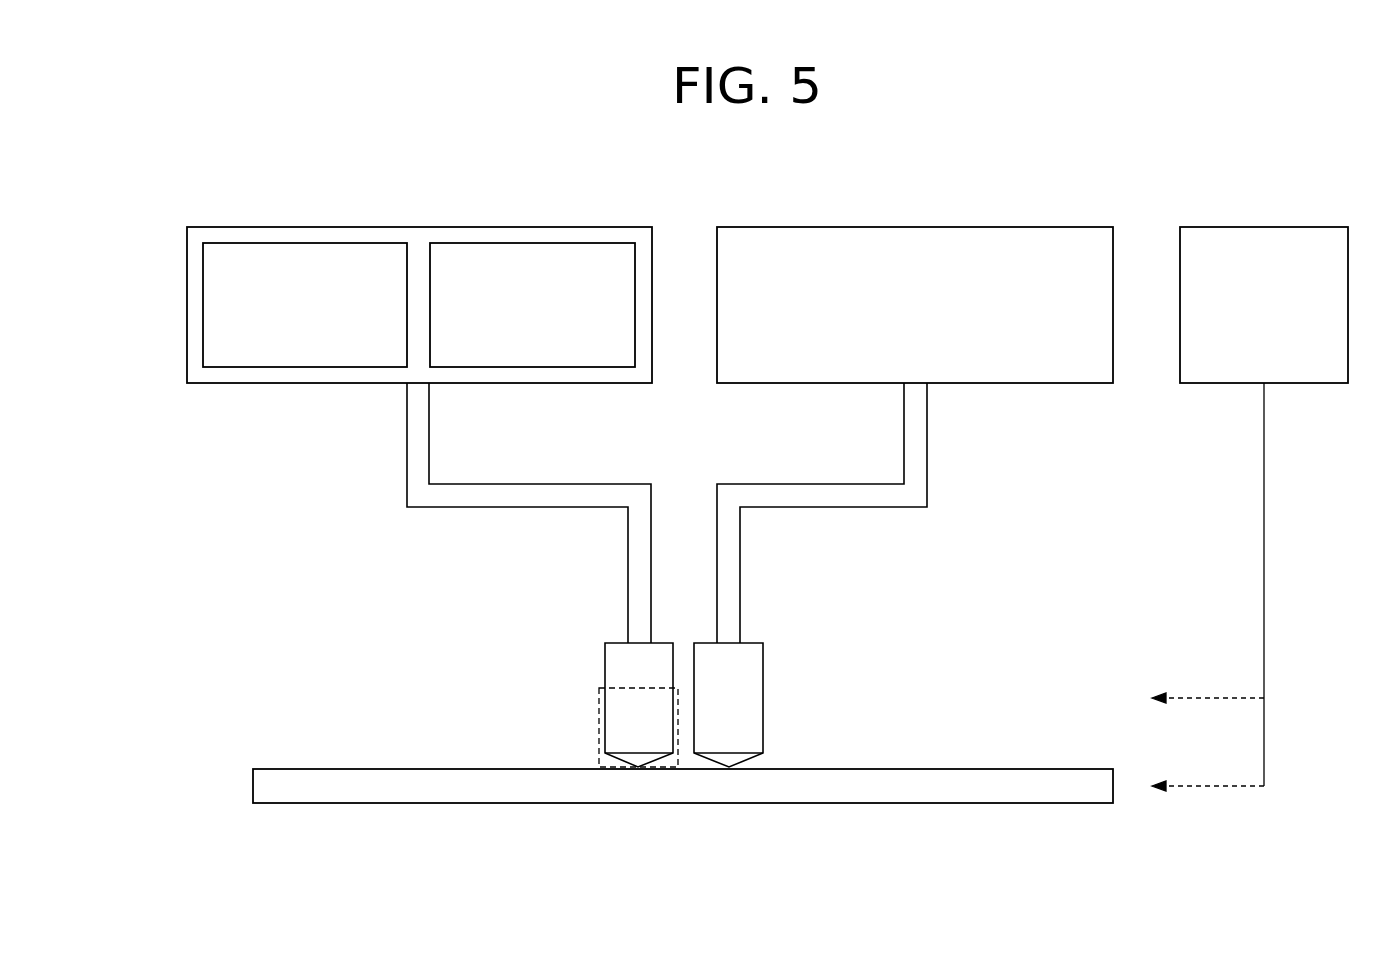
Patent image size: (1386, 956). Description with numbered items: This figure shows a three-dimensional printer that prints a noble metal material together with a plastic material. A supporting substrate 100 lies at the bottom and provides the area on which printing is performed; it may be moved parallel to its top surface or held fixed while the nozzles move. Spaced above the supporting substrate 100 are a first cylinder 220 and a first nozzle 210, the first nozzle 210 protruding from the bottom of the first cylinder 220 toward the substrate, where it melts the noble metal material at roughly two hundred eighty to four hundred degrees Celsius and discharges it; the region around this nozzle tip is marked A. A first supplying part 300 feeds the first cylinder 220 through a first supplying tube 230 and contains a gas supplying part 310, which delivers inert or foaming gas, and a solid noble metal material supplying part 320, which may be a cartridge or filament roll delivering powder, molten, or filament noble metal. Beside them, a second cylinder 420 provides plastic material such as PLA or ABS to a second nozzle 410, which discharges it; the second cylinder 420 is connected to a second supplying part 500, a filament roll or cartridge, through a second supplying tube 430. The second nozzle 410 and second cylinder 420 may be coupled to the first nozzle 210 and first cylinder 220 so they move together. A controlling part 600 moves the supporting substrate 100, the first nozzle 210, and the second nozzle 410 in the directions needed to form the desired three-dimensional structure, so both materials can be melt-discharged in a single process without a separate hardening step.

The supporting substrate 100 is at (1025, 769).
The first nozzle 210 is at (625, 766).
The first cylinder 220 is at (605, 665).
The first supplying tube 230 is at (627, 565).
The first supplying part 300 is at (578, 227).
The gas supplying part 310 is at (230, 367).
The solid noble metal material supplying part 320 is at (585, 367).
The second nozzle 410 is at (746, 765).
The second cylinder 420 is at (763, 665).
The second supplying tube 430 is at (740, 565).
The second supplying part 500 is at (1040, 227).
The controlling part 600 is at (1287, 227).
The region A is at (599, 701).